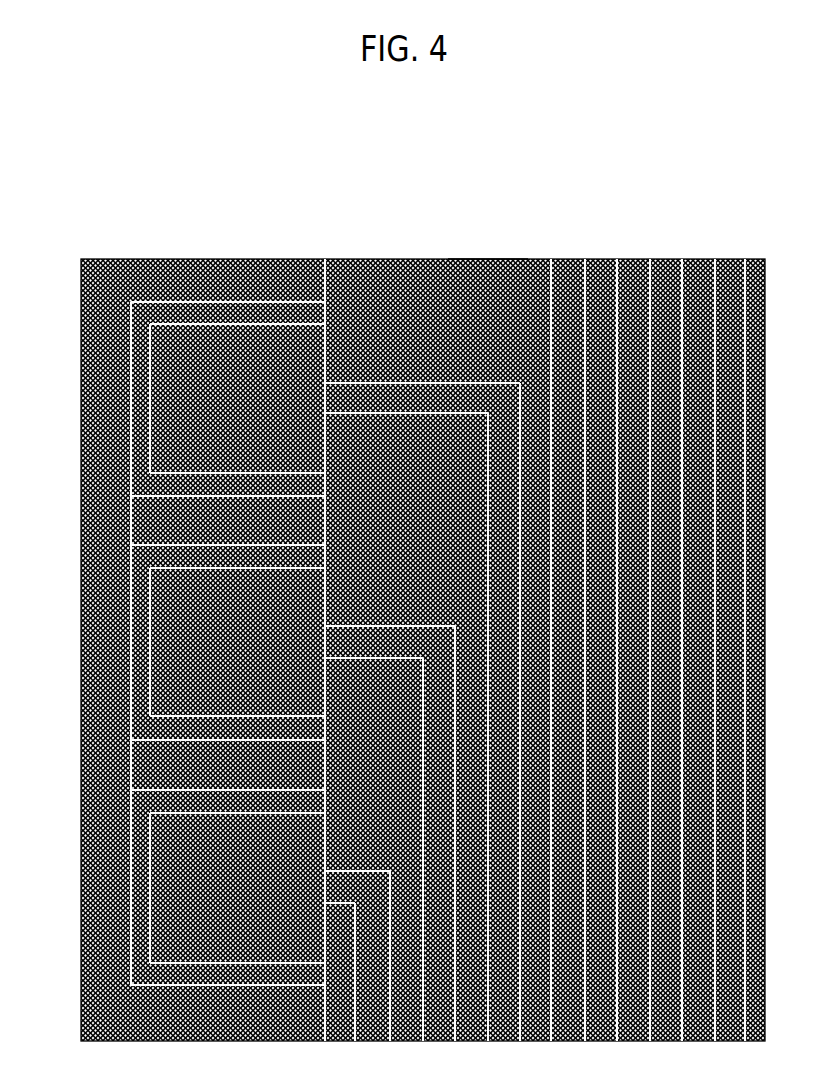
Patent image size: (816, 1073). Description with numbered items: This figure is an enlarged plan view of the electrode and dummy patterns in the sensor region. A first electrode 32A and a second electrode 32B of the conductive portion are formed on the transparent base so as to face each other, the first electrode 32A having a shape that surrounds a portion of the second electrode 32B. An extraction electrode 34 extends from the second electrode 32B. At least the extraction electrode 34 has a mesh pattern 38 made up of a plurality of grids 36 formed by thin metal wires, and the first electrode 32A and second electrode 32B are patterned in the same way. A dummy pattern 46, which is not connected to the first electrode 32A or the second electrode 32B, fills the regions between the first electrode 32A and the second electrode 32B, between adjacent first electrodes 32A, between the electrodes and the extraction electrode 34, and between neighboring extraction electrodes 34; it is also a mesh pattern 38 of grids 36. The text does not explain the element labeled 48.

The first electrode 32A is at (205, 620).
The second electrode 32B is at (372, 620).
The extraction electrode 34 is at (539, 605).
The grid 36 is at (389, 605).
The mesh pattern 38 is at (291, 580).
The dummy pattern 46 is at (386, 619).
The boundary portion 48 is at (488, 229).